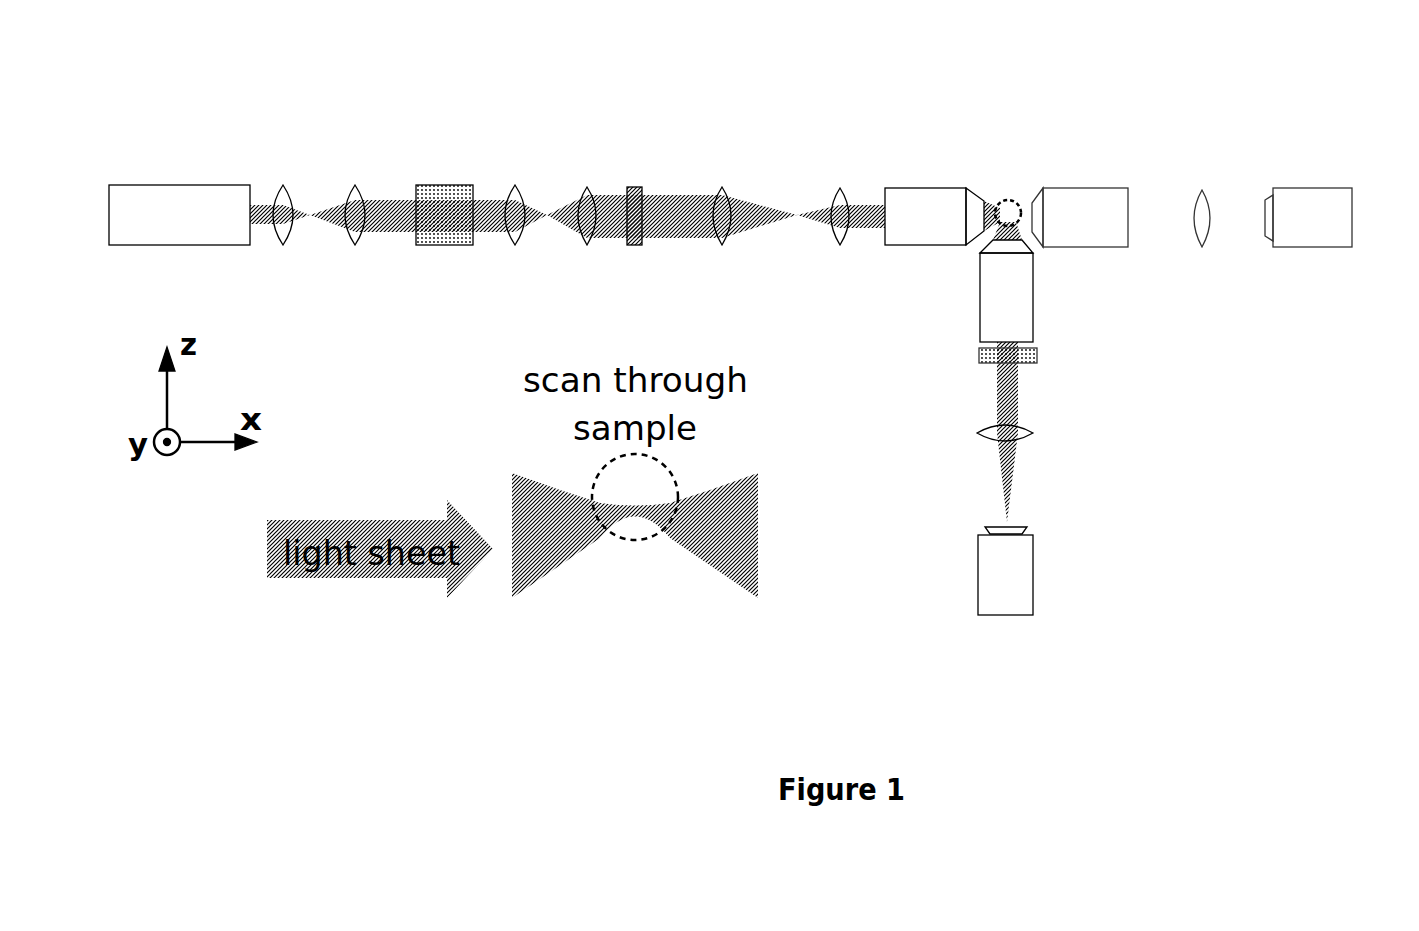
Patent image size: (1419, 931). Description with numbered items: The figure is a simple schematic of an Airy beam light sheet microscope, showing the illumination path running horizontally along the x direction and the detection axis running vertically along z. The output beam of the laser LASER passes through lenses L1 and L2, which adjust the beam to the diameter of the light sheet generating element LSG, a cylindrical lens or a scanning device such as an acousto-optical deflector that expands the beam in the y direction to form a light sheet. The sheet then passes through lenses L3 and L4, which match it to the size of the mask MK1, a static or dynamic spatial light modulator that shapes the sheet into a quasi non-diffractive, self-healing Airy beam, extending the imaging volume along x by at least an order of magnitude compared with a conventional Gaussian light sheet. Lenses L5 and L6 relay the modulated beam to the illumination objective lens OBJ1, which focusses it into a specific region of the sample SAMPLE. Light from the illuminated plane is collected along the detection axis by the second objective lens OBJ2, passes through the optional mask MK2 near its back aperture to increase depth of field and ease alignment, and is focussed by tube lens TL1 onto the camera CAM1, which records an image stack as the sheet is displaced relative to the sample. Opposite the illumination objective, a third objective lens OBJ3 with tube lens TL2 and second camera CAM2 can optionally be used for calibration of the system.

The laser LASER is at (179, 215).
The lens L1 is at (291, 192).
The lens L2 is at (360, 240).
The light sheet generating element LSG is at (445, 192).
The lens L3 is at (522, 192).
The lens L4 is at (594, 243).
The mask MK1 is at (637, 192).
The lens L5 is at (719, 243).
The lens L6 is at (843, 192).
The objective lens OBJ1 is at (934, 192).
The sample SAMPLE is at (1008, 176).
The second objective lens OBJ2 is at (1057, 291).
The third objective lens OBJ3 is at (1087, 194).
The mask MK2 is at (1047, 360).
The tube lens TL1 is at (1035, 437).
The camera CAM1 is at (1061, 571).
The tube lens TL2 is at (1205, 246).
The second camera CAM2 is at (1316, 194).